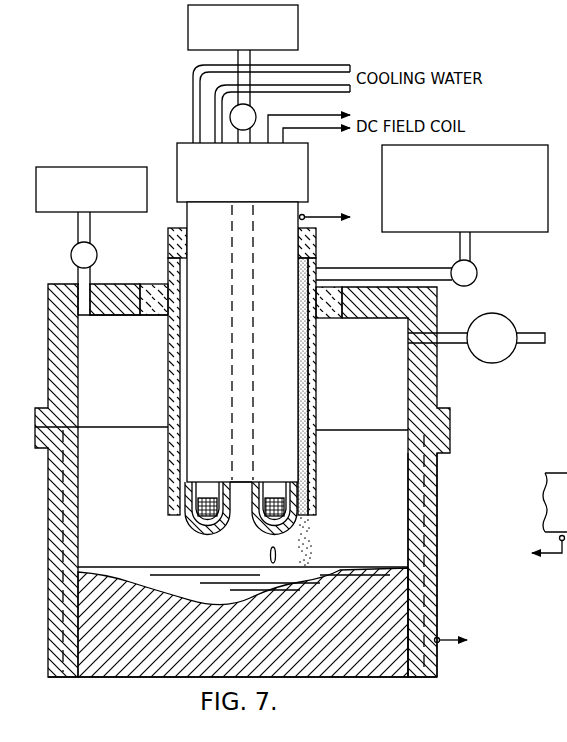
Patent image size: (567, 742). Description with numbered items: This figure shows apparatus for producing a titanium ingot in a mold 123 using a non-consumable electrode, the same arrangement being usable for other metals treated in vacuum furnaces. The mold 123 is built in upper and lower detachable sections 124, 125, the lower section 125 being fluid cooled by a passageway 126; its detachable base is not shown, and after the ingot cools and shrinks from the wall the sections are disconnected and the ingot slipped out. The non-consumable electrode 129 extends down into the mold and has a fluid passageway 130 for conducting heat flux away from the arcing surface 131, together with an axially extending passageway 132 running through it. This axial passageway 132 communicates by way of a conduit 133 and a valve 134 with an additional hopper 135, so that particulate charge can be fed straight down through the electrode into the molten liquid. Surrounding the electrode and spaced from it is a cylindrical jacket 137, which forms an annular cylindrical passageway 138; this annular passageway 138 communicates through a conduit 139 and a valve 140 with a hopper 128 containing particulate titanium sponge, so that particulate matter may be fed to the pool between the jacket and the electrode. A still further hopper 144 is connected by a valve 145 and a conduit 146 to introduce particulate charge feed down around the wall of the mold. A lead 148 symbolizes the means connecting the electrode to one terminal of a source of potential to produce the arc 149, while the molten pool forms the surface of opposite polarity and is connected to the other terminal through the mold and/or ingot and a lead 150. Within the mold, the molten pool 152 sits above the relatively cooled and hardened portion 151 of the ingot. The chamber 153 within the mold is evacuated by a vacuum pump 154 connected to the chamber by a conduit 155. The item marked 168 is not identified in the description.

The mold 123 is at (437, 498).
The upper mold section 124 is at (437, 393).
The lower mold section 125 is at (438, 530).
The passageway 126 is at (406, 470).
The hopper 128 is at (512, 146).
The non-consumable electrode 129 is at (294, 402).
The fluid passageway 130 is at (300, 526).
The arcing surface 131 is at (195, 536).
The axially extending passageway 132 is at (228, 420).
The conduit 133 is at (238, 66).
The valve 134 is at (258, 121).
The additional hopper 135 is at (188, 30).
The cylindrical jacket 137 is at (316, 357).
The annular cylindrical passageway 138 is at (302, 376).
The conduit 139 is at (377, 268).
The valve 140 is at (453, 265).
The further hopper 144 is at (115, 168).
The valve 145 is at (95, 253).
The conduit 146 is at (91, 276).
The lead 148 is at (323, 214).
The arc 149 is at (270, 557).
The lead 150 is at (441, 641).
The cooled and hardened portion of ingot 151 is at (118, 674).
The molten pool 152 is at (133, 570).
The chamber 153 is at (135, 384).
The vacuum pump 154 is at (518, 311).
The conduit 155 is at (452, 330).
The power supply 168 is at (564, 470).